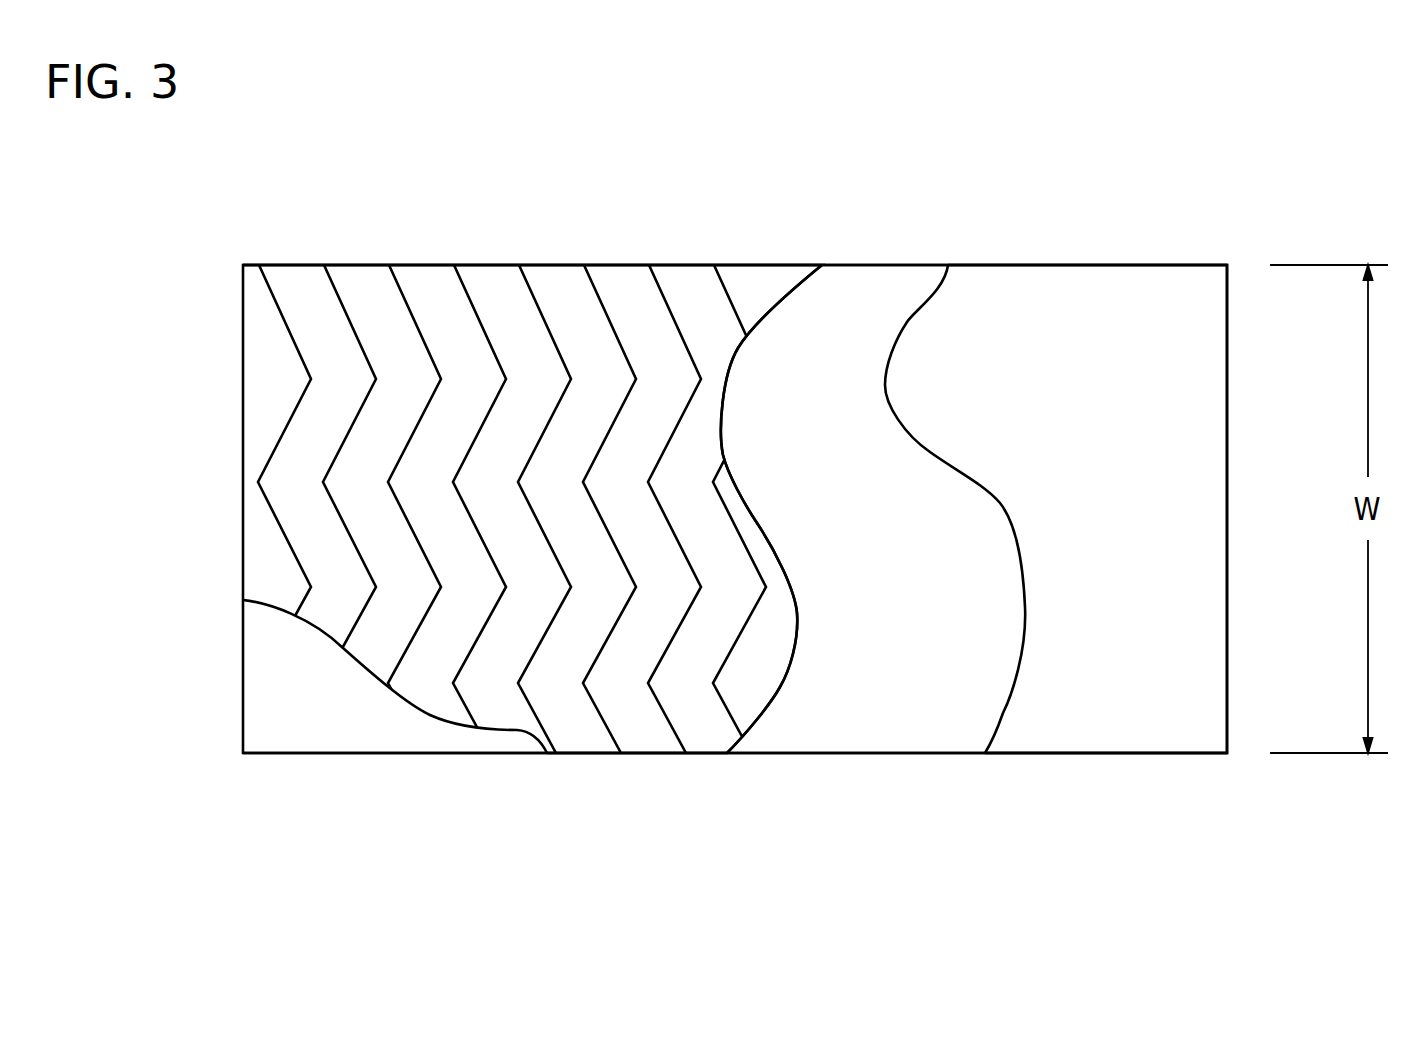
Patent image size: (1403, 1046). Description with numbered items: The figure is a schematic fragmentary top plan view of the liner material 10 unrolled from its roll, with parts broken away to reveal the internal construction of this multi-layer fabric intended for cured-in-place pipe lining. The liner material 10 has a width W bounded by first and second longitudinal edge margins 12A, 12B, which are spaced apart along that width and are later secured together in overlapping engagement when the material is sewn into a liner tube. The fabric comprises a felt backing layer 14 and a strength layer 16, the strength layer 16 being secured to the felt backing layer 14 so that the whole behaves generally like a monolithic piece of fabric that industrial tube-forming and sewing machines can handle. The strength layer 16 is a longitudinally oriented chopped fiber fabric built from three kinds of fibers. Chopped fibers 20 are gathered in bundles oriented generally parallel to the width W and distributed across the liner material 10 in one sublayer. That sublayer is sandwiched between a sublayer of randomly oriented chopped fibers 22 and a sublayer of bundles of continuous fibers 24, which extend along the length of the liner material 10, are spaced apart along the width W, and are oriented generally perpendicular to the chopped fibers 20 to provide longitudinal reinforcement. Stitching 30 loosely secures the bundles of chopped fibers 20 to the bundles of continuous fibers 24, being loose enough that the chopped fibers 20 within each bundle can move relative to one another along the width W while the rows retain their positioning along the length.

The liner material 10 is at (555, 850).
The first longitudinal edge margin 12A is at (1047, 740).
The second longitudinal edge margin 12B is at (1080, 279).
The felt backing layer 14 is at (1142, 755).
The strength layer 16 is at (788, 254).
The chopped fibers 20 is at (677, 302).
The random chopped fibers 22 is at (868, 722).
The continuous fibers 24 is at (250, 639).
The stitching 30 is at (412, 316).